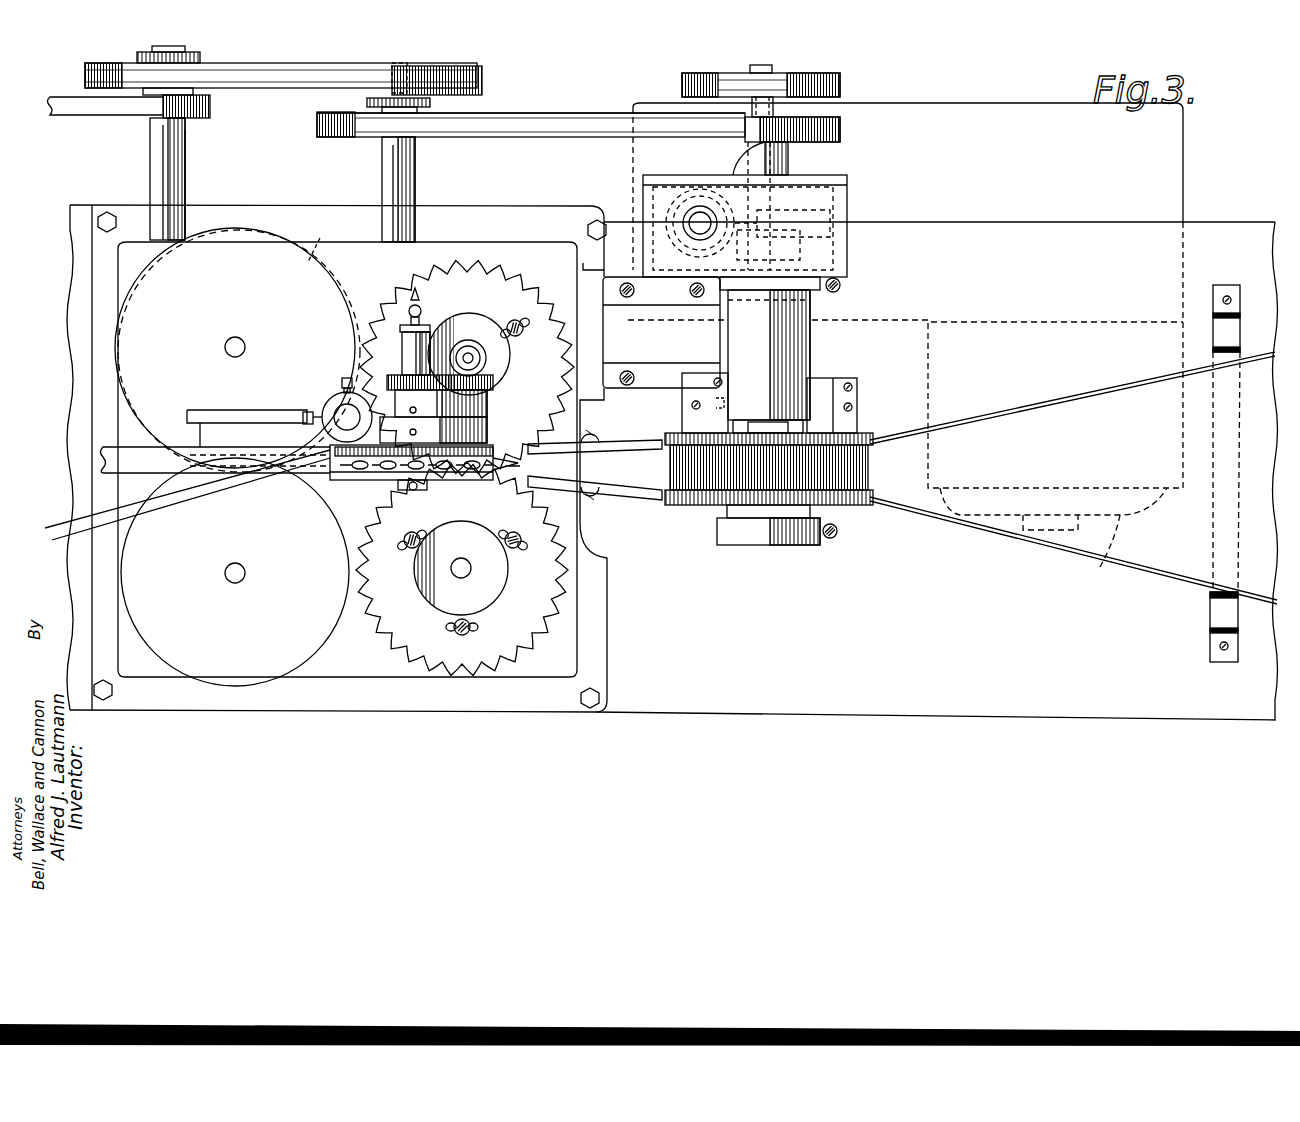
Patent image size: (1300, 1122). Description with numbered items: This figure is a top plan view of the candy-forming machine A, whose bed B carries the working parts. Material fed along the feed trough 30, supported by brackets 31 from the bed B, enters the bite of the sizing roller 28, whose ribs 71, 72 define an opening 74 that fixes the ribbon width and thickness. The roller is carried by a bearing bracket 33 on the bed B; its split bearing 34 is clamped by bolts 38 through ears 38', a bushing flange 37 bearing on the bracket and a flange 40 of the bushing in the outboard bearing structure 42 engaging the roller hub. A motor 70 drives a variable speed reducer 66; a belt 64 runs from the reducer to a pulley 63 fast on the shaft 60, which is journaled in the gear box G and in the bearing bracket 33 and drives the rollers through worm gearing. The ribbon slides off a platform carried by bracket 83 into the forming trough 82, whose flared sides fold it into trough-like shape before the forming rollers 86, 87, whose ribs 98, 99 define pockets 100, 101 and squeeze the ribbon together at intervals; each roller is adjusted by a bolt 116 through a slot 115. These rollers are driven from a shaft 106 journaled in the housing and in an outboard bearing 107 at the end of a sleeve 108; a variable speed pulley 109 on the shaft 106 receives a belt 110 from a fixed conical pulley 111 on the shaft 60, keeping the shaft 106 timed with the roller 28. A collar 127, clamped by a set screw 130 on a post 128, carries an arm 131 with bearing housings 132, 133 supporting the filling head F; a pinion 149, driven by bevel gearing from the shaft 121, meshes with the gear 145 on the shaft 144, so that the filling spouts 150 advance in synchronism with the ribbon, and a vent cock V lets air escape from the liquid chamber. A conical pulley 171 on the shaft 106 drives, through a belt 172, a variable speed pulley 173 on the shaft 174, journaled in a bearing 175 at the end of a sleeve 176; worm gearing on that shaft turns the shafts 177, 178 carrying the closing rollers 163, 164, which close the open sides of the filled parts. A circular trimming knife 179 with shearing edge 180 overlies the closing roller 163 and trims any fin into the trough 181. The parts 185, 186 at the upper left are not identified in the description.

The arm 185 is at (64, 98).
The gear 186 is at (136, 116).
The belt 172 is at (300, 66).
The conical pulley 171 is at (478, 70).
The shaft 106 is at (405, 62).
The shaft 174 is at (176, 48).
The variable speed pulley 173 is at (225, 95).
The bearing 175 is at (150, 125).
The sleeve 176 is at (186, 162).
The outboard bearing 107 is at (378, 138).
The sleeve 108 is at (386, 186).
The variable speed pulley 109 is at (462, 112).
The belt 110 is at (526, 132).
The belt 64 is at (840, 85).
The pulley 63 is at (713, 75).
The shaft 60 is at (762, 68).
The fixed conical pulley 111 is at (706, 142).
The gear box G is at (848, 208).
The split bearing 34 is at (822, 280).
The ears 38' is at (861, 277).
The bolts 38 is at (743, 332).
The bearing bracket 33 is at (812, 352).
The opening 74 is at (826, 378).
The bracket 83 is at (710, 367).
The flange 37 is at (757, 422).
The sizing roller 28 is at (874, 465).
The rib 71 is at (874, 440).
The rib 72 is at (850, 506).
The flange 40 is at (727, 513).
The outboard bearing structure 42 is at (740, 530).
The forming trough 82 is at (636, 490).
The feed trough 30 is at (1022, 418).
The motor 70 is at (1113, 540).
The brackets 31 is at (1213, 610).
The variable speed reducer 66 is at (1003, 113).
The machine A is at (783, 720).
The bed B is at (962, 718).
The circular trimming knife 179 is at (318, 280).
The shearing edge 180 is at (336, 300).
The closing roller 163 is at (328, 239).
The shaft 177 is at (242, 340).
The closing roller 164 is at (250, 686).
The shaft 178 is at (246, 572).
The trough 181 is at (58, 540).
The set screw 130 is at (306, 412).
The post 128 is at (347, 392).
The collar 127 is at (340, 410).
The filling head F is at (369, 491).
The filling spouts 150 is at (430, 476).
The vent cock V is at (412, 492).
The bearing housing 133 is at (487, 438).
The bearing housing 132 is at (480, 403).
The pinion 149 is at (488, 383).
The shaft 121 is at (487, 358).
The gear 145 is at (455, 348).
The arm 131 is at (398, 400).
The shaft 144 is at (412, 340).
The forming roller 86 is at (522, 290).
The ribs 98 is at (502, 270).
The pockets 100 is at (458, 262).
The bolt 116 is at (524, 320).
The slot 115 is at (508, 322).
The forming roller 87 is at (388, 626).
The ribs 99 is at (516, 667).
The pockets 101 is at (565, 626).